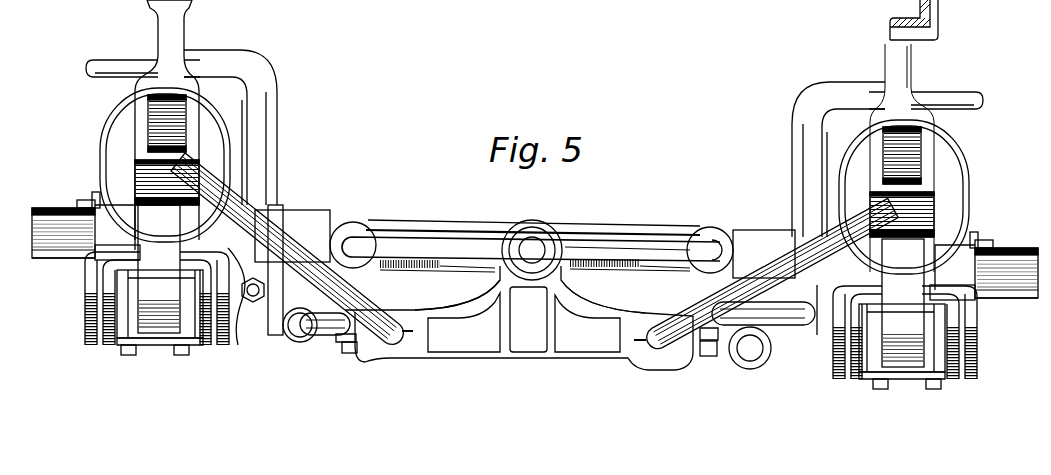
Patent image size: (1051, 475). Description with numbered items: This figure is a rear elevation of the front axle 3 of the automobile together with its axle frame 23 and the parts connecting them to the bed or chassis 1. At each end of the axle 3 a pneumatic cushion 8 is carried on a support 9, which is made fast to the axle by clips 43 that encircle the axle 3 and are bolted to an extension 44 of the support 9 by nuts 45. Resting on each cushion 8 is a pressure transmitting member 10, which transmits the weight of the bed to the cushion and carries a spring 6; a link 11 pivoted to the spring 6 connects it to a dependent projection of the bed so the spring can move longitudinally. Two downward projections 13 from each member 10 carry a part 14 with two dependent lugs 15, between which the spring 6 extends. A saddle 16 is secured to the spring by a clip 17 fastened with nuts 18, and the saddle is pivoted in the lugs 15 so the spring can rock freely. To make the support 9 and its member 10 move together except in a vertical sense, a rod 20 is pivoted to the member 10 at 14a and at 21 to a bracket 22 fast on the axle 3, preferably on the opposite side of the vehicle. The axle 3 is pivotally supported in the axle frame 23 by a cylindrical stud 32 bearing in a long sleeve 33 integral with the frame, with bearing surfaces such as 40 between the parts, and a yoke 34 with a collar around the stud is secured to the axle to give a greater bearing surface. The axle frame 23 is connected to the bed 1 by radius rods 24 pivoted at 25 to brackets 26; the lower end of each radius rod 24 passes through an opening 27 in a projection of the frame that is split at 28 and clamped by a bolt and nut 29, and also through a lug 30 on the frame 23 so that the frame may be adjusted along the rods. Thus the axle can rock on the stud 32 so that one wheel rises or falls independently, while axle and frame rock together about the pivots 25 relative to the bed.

The bed or chassis 1 is at (934, 12).
The axle 3 is at (422, 226).
The spring 6 is at (155, 257).
The pneumatic cushion 8 is at (118, 118).
The support 9 is at (100, 160).
The pressure transmitting member 10 is at (227, 60).
The link 11 is at (135, 182).
The downward projection 13 is at (279, 145).
The part 14 is at (110, 255).
The pivot 14a is at (252, 303).
The lug 15 is at (92, 308).
The saddle 16 is at (127, 336).
The clip 17 is at (209, 337).
The nut 18 is at (133, 352).
The rod 20 is at (424, 308).
The pivot 21 is at (753, 352).
The bracket 22 is at (736, 232).
The axle frame 23 is at (548, 358).
The radius rod 24 is at (258, 207).
The pivot 25 is at (137, 140).
The bracket 26 is at (166, 19).
The opening 27 is at (402, 345).
The split 28 is at (358, 352).
The bolt and nut 29 is at (345, 345).
The lug 30 is at (776, 4).
The cylindrical stud 32 is at (540, 245).
The sleeve 33 is at (562, 255).
The yoke 34 is at (440, 248).
The bearing surface 40 is at (533, 220).
The clip 43 is at (100, 240).
The extension 44 is at (90, 210).
The nut 45 is at (77, 204).